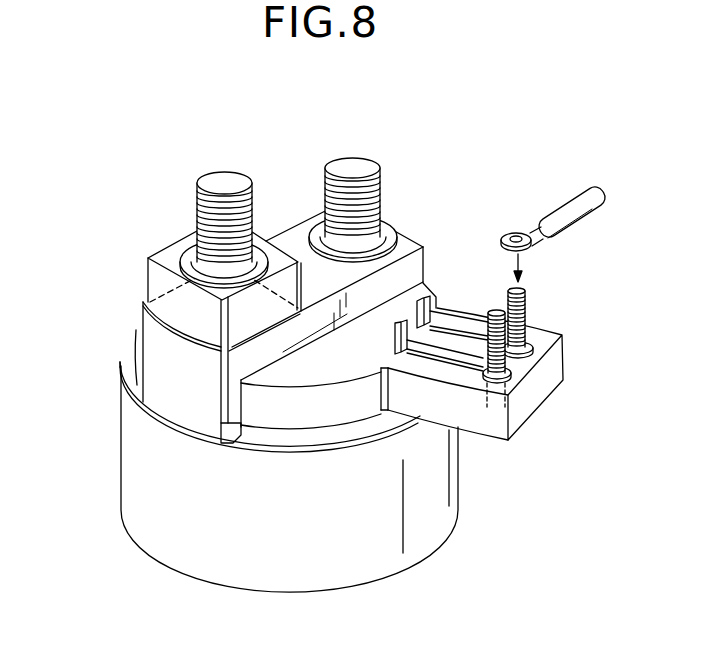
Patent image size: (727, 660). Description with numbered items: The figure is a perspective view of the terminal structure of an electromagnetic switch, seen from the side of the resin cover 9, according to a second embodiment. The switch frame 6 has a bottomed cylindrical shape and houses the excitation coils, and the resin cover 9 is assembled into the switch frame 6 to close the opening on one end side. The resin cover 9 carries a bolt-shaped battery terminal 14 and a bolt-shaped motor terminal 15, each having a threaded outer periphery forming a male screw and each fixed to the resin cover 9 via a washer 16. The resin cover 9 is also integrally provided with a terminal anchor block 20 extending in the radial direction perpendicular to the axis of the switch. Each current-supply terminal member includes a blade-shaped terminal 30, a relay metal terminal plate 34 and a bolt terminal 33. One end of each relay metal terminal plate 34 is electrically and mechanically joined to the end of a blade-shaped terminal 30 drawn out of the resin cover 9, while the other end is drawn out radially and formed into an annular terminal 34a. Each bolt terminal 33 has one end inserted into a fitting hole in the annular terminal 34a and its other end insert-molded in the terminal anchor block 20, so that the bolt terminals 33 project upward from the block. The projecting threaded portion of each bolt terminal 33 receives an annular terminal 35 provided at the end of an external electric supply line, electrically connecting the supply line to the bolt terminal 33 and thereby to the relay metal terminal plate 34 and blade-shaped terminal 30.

The switch frame 6 is at (177, 467).
The resin cover 9 is at (175, 357).
The battery terminal 14 is at (196, 218).
The motor terminal 15 is at (382, 236).
The washer 16 is at (176, 243).
The terminal anchor block 20 is at (513, 412).
The blade-shaped terminal 30 is at (412, 297).
The bolt terminal 33 is at (524, 301).
The relay metal terminal plate 34 is at (436, 358).
The annular terminal 34a is at (509, 365).
The annular terminal 35 is at (507, 232).